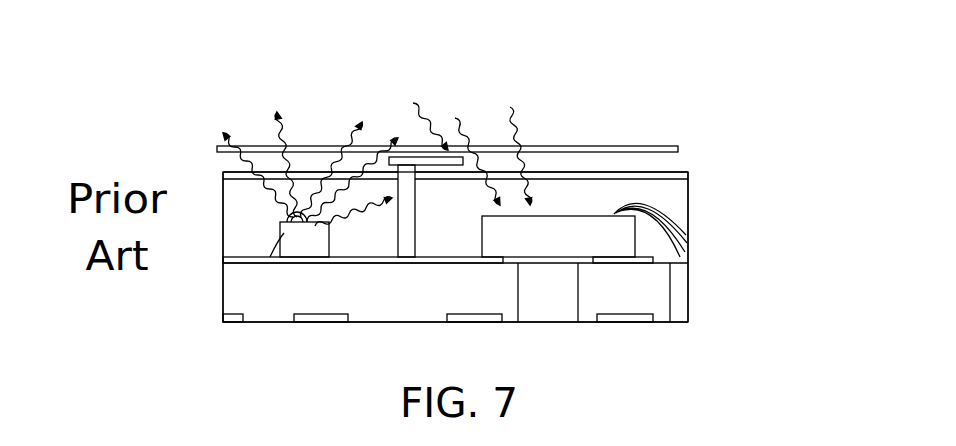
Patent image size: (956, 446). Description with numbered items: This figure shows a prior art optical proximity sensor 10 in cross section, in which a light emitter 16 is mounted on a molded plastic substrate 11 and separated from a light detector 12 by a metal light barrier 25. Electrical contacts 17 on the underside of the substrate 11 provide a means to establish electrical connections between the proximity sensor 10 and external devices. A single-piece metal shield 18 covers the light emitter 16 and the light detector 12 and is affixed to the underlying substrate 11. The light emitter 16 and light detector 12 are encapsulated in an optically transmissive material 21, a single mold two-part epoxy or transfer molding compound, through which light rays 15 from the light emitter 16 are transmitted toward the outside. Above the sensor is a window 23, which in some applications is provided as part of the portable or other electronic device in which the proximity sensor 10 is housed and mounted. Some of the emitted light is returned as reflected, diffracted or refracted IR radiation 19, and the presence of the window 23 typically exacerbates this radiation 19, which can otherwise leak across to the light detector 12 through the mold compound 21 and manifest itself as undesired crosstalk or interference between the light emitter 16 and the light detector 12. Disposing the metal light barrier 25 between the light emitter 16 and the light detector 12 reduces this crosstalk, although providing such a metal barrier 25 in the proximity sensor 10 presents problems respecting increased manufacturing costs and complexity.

The optical proximity sensor 10 is at (734, 106).
The substrate 11 is at (243, 292).
The light detector 12 is at (593, 230).
The light rays 15 is at (283, 138).
The light emitter 16 is at (302, 245).
The electrical contacts 17 is at (467, 323).
The metal shield 18 is at (689, 174).
The reflected, diffracted or refracted IR radiation 19 is at (481, 172).
The optically transmissive material 21 is at (443, 228).
The window 23 is at (583, 146).
The metal light barrier 25 is at (407, 168).